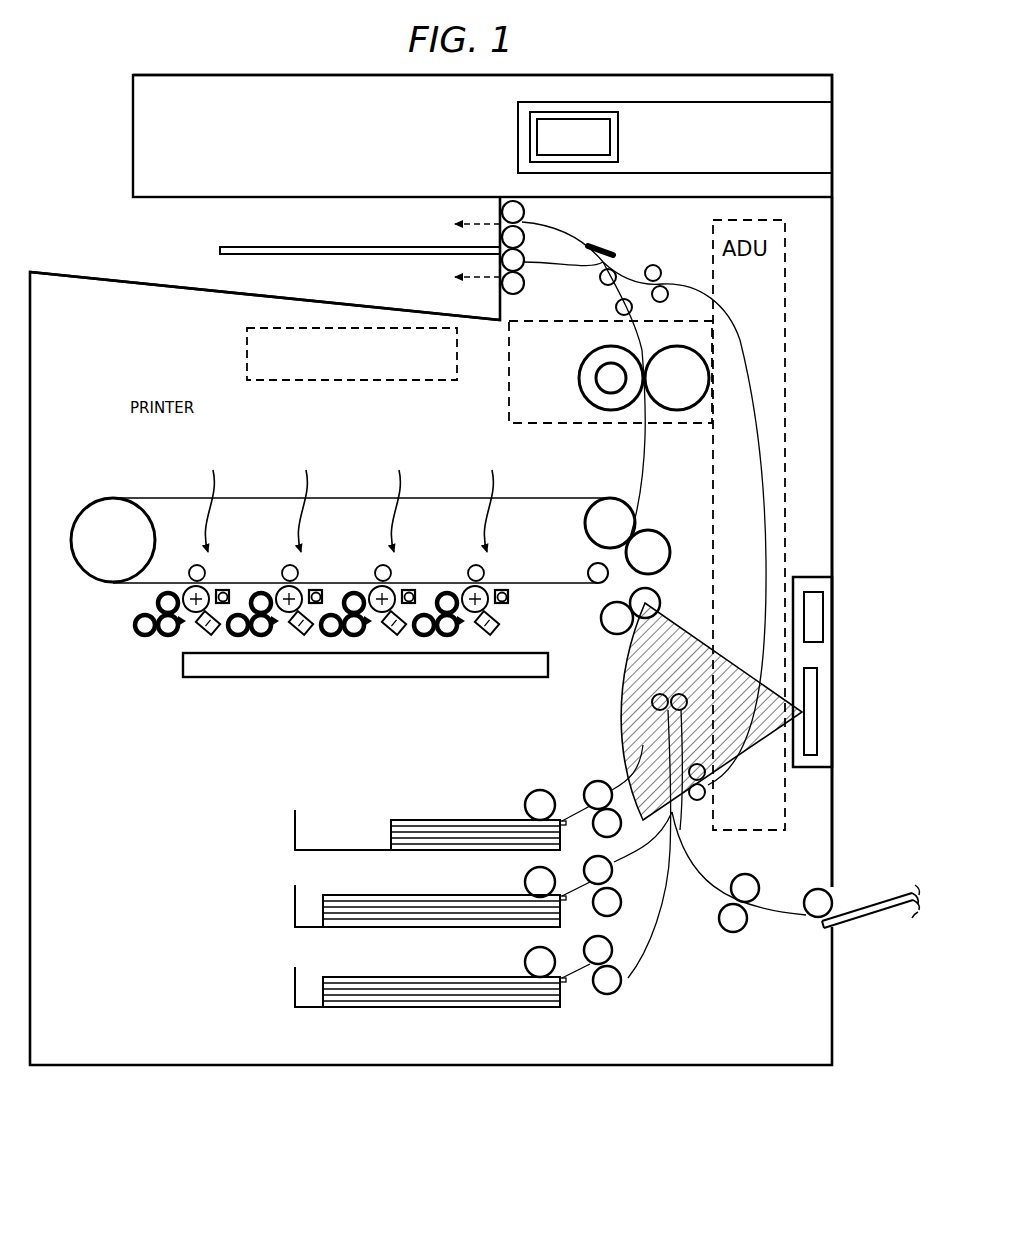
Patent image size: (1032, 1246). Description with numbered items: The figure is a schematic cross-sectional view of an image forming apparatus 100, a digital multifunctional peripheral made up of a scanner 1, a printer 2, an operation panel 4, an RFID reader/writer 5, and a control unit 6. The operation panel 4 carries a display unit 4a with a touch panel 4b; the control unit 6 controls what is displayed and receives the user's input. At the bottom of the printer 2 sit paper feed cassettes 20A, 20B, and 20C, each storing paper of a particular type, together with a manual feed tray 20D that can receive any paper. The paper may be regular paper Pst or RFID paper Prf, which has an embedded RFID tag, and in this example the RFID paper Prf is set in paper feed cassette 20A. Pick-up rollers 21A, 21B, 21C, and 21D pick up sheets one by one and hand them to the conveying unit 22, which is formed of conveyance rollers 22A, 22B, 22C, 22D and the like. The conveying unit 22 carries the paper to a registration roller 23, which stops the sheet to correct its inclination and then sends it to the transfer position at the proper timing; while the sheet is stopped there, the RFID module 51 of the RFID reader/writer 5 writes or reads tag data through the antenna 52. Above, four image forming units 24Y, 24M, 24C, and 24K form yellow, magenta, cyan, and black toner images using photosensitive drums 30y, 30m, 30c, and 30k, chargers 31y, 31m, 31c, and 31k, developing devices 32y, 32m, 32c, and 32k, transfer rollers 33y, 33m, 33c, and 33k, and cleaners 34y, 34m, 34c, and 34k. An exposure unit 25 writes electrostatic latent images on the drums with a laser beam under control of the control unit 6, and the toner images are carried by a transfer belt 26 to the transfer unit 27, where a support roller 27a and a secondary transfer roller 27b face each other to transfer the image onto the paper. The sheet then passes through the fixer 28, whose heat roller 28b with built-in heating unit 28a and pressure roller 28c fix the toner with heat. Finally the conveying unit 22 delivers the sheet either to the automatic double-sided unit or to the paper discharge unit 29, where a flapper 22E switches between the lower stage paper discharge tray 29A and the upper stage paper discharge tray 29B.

The image forming apparatus 100 is at (468, 1101).
The scanner 1 is at (133, 141).
The printer 2 is at (832, 222).
The operation panel 4 is at (832, 138).
The display unit 4a is at (530, 156).
The touch panel 4b is at (537, 123).
The RFID reader/writer 5 is at (830, 572).
The control unit 6 is at (247, 355).
The paper discharge unit 29 is at (124, 219).
The lower stage paper discharge tray 29A is at (150, 289).
The upper stage paper discharge tray 29B is at (225, 249).
The flapper 22E is at (606, 250).
The fixer 28 is at (535, 423).
The heating unit 28a is at (608, 366).
The heat roller 28b is at (604, 410).
The pressure roller 28c is at (679, 410).
The transfer belt 26 is at (124, 497).
The exposure unit 25 is at (538, 677).
The image forming unit 24Y is at (215, 498).
The image forming unit 24M is at (307, 498).
The image forming unit 24C is at (399, 498).
The image forming unit 24K is at (491, 498).
The photosensitive drum 30y is at (190, 588).
The photosensitive drum 30m is at (283, 588).
The photosensitive drum 30c is at (376, 588).
The photosensitive drum 30k is at (469, 588).
The charger 31y is at (212, 636).
The charger 31m is at (305, 636).
The charger 31c is at (398, 636).
The charger 31k is at (491, 636).
The developing device 32y is at (170, 638).
The developing device 32m is at (263, 638).
The developing device 32c is at (356, 638).
The developing device 32k is at (449, 638).
The transfer roller 33y is at (190, 560).
The transfer roller 33m is at (283, 560).
The transfer roller 33c is at (376, 560).
The transfer roller 33k is at (469, 560).
The cleaner 34y is at (222, 593).
The cleaner 34m is at (315, 593).
The cleaner 34c is at (408, 593).
The cleaner 34k is at (501, 593).
The transfer unit 27 is at (640, 545).
The support roller 27a is at (610, 512).
The secondary transfer roller 27b is at (660, 600).
The registration roller 23 is at (612, 635).
The RFID module 51 is at (823, 620).
The antenna 52 is at (817, 725).
The paper feed cassette 20A is at (295, 832).
The paper feed cassette 20B is at (295, 907).
The paper feed cassette 20C is at (295, 987).
The manual feed tray 20D is at (893, 914).
The pick-up roller 21A is at (525, 802).
The pick-up roller 21B is at (525, 878).
The pick-up roller 21C is at (523, 958).
The pick-up roller 21D is at (814, 889).
The conveying unit 22 is at (714, 990).
The conveyance roller 22A is at (598, 780).
The conveyance roller 22B is at (660, 890).
The conveyance roller 22C is at (656, 970).
The conveyance roller 22D is at (750, 905).
The RFID paper Prf is at (411, 818).
The regular paper Pst is at (353, 893).